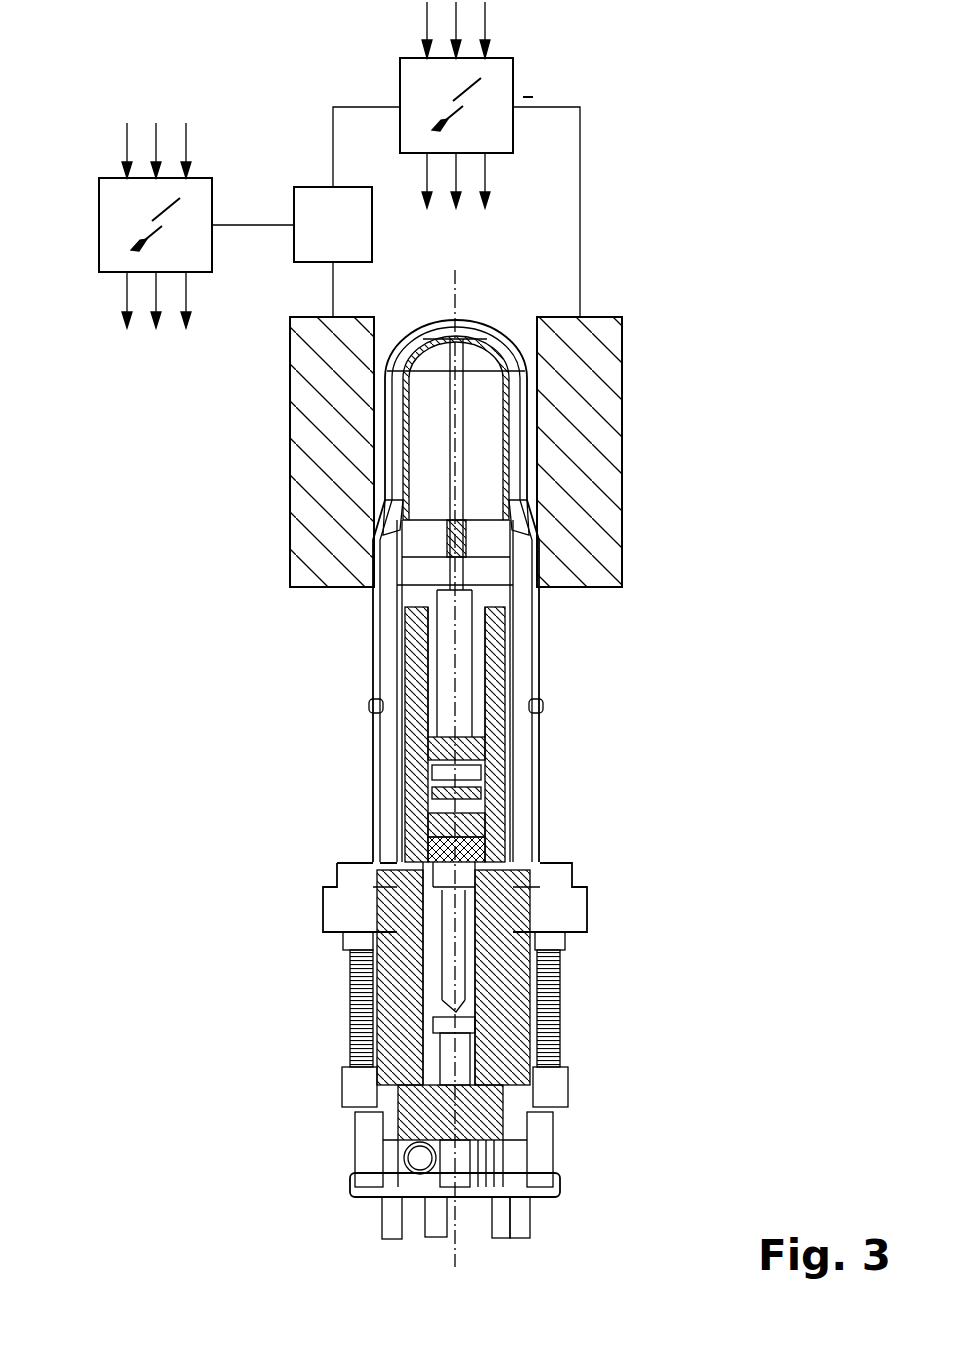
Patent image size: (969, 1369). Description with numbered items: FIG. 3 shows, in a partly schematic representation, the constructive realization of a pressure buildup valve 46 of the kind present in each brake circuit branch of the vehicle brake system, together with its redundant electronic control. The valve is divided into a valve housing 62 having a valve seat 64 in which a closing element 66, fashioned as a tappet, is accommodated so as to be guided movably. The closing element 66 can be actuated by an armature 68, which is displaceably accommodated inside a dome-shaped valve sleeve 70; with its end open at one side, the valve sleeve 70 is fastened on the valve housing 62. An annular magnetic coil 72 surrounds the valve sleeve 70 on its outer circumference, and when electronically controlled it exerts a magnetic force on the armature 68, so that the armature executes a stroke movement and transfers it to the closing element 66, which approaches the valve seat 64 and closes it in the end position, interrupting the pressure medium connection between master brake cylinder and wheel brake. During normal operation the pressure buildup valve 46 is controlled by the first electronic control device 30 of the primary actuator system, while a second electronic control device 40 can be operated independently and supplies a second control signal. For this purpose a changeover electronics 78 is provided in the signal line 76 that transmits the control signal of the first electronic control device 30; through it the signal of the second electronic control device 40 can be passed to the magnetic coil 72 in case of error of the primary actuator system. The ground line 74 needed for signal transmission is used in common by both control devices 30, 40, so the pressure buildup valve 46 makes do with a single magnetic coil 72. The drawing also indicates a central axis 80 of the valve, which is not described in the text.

The first electronic control device 30 is at (513, 128).
The second electronic control device 40 is at (98, 225).
The pressure buildup valve 46 is at (563, 727).
The valve housing 62 is at (410, 983).
The valve seat 64 is at (475, 1030).
The closing element 66 is at (463, 668).
The armature 68 is at (488, 390).
The valve sleeve 70 is at (528, 560).
The magnetic coil 72 is at (622, 448).
The ground line 74 is at (580, 136).
The signal line 76 is at (333, 140).
The changeover electronics 78 is at (372, 222).
The central axis 80 is at (458, 283).